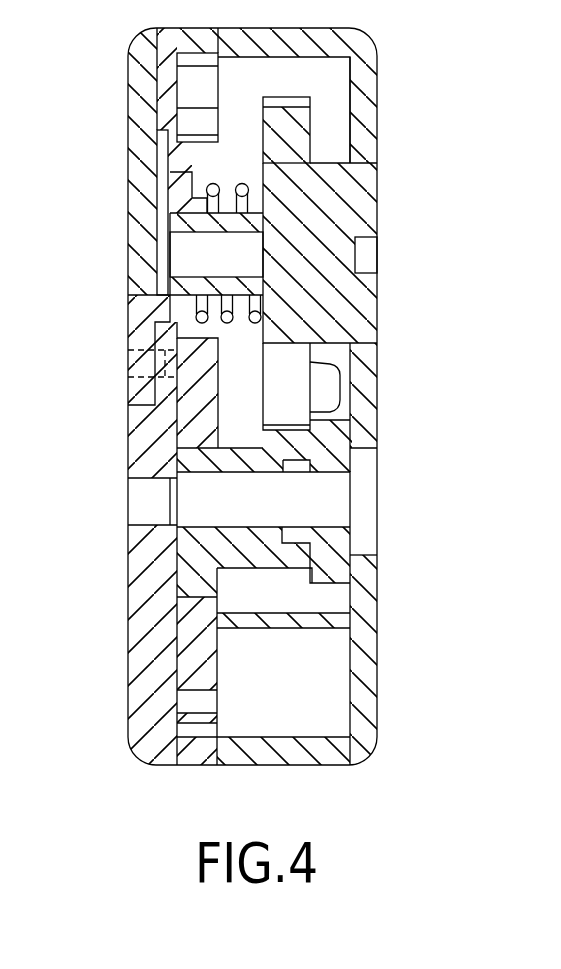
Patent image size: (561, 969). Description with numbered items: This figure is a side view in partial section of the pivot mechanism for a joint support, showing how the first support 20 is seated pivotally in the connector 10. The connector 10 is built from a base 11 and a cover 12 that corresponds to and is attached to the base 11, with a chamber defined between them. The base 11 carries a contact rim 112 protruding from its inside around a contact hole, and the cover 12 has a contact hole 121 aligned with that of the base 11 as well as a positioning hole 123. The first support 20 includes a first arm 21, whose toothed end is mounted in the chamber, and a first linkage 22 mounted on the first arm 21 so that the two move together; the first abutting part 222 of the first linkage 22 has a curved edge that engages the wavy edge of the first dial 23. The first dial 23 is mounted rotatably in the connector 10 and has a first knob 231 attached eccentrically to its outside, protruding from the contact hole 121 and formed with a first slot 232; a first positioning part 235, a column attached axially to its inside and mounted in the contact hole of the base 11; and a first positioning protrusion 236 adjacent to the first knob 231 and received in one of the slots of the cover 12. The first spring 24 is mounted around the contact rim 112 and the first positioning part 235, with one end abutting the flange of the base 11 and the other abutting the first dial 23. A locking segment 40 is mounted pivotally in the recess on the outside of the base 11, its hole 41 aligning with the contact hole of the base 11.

The connector 10 is at (400, 63).
The locking segment 40 is at (142, 92).
The contact rim 112 is at (172, 187).
The first spring 24 is at (210, 200).
The first positioning part 235 is at (220, 222).
The hole 41 is at (153, 278).
The base 11 is at (155, 442).
The first linkage 22 is at (187, 553).
The first arm 21 is at (192, 650).
The first dial 23 is at (322, 127).
The contact hole 121 is at (368, 167).
The first knob 231 is at (367, 209).
The first slot 232 is at (365, 258).
The first positioning protrusion 236 is at (330, 385).
The cover 12 is at (367, 419).
The positioning hole 123 is at (360, 507).
The first abutting part 222 is at (307, 558).
The first support 20 is at (258, 645).